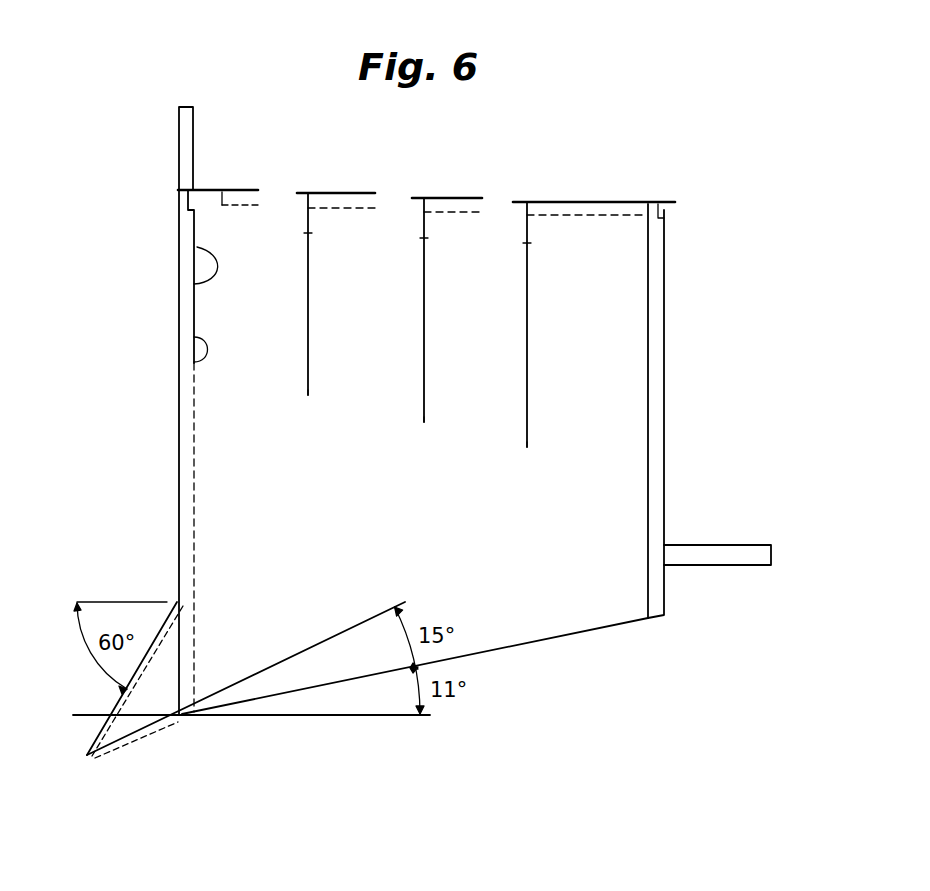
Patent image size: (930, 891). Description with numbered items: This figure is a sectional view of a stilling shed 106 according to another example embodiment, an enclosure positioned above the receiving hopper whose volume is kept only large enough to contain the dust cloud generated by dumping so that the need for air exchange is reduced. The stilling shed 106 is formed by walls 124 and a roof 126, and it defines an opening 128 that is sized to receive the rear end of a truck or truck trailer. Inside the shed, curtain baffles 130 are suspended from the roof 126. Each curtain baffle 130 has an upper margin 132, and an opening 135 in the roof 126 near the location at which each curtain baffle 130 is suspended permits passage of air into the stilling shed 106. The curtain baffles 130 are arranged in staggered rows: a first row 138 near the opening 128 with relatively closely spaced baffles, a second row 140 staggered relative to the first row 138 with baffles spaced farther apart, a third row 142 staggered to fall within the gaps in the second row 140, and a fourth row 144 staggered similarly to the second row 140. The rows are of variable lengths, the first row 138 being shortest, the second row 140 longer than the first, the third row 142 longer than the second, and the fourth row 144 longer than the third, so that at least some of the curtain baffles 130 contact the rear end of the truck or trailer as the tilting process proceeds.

The stilling shed 106 is at (666, 250).
The walls 124 is at (666, 345).
The roof 126 is at (610, 203).
The opening 128 is at (179, 438).
The curtain baffles 130 is at (194, 284).
The upper margin 132 is at (310, 208).
The opening 135 is at (495, 200).
The first row 138 is at (194, 337).
The second row 140 is at (308, 395).
The third row 142 is at (424, 422).
The fourth row 144 is at (527, 447).